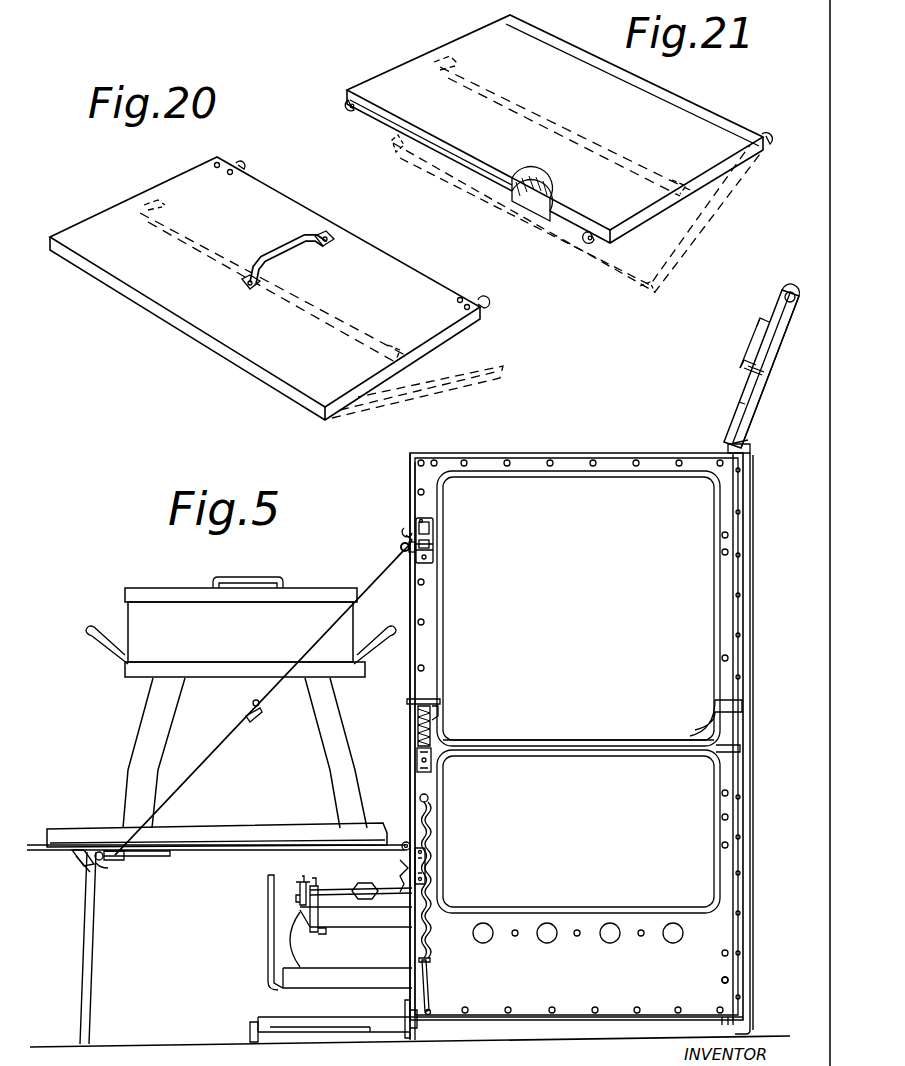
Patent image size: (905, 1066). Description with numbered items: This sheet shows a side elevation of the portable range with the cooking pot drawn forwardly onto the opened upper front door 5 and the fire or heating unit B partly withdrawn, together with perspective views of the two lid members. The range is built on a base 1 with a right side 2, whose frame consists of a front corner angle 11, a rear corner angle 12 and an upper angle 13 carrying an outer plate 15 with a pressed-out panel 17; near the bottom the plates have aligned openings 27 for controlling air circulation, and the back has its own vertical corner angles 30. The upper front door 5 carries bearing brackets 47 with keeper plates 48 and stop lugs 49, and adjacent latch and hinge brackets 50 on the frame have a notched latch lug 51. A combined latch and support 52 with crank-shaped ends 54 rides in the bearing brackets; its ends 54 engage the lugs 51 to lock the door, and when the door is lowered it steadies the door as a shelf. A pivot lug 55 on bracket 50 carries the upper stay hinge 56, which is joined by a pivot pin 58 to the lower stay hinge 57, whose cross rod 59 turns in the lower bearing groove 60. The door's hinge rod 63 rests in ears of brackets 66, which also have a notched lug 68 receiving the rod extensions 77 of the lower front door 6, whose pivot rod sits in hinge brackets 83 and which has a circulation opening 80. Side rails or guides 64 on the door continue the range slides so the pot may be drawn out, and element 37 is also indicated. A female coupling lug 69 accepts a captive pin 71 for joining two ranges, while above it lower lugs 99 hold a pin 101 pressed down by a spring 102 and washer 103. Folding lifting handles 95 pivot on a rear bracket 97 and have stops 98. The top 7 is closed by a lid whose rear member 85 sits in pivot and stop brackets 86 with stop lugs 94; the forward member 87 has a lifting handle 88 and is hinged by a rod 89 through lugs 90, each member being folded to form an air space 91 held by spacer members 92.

In FIG. 5, the base 1 is at (738, 1022).
In FIG. 5, the right side 2 is at (725, 960).
In FIG. 5, the upper front door 5 is at (216, 859).
In FIG. 5, the lower front door 6 is at (334, 1024).
In FIG. 20, the top of the range 7 is at (246, 188).
In FIG. 21, the top of the range 7 is at (580, 58).
In FIG. 5, the top of the range 7 is at (773, 372).
In FIG. 5, the front corner angle 11 is at (410, 494).
In FIG. 5, the rear corner angle 12 is at (750, 864).
In FIG. 5, the upper angle 13 is at (619, 455).
In FIG. 5, the outer plate 15 is at (573, 608).
In FIG. 5, the pressed-out panel 17 is at (690, 787).
In FIG. 5, the aligned openings 27 is at (546, 943).
In FIG. 5, the vertical corner angles 30 is at (750, 610).
In FIG. 5, the table bracket 37 is at (165, 848).
In FIG. 5, the bearing brackets 47 is at (74, 856).
In FIG. 5, the keeper plates 48 is at (137, 883).
In FIG. 5, the stop lugs 49 is at (84, 862).
In FIG. 5, the latch and hinge brackets 50 is at (433, 530).
In FIG. 5, the notched latch lug 51 is at (404, 529).
In FIG. 5, the combined latch and support 52 is at (92, 933).
In FIG. 5, the crank-shaped ends 54 is at (110, 861).
In FIG. 5, the pivot lug 55 is at (430, 548).
In FIG. 5, the upper stay hinge 56 is at (400, 561).
In FIG. 5, the lower stay hinge 57 is at (212, 754).
In FIG. 5, the pivot pin 58 is at (260, 710).
In FIG. 5, the cross rod 59 is at (401, 547).
In FIG. 5, the lower bearing groove 60 is at (104, 858).
In FIG. 5, the hinge rod 63 is at (398, 848).
In FIG. 5, the side rails or guides 64 is at (268, 829).
In FIG. 5, the brackets 66 is at (434, 836).
In FIG. 5, the notched lug 68 is at (406, 866).
In FIG. 5, the female coupling lug 69 is at (428, 857).
In FIG. 5, the captive pin 71 is at (428, 995).
In FIG. 5, the rod extensions 77 is at (250, 1032).
In FIG. 21, the circulation opening 80 is at (768, 142).
In FIG. 5, the hinge brackets 83 is at (414, 1034).
In FIG. 21, the rear member of the lid 85 is at (538, 53).
In FIG. 5, the rear member of the lid 85 is at (768, 391).
In FIG. 5, the pivot and stop brackets 86 is at (751, 446).
In FIG. 20, the forward member of the lid 87 is at (192, 312).
In FIG. 5, the forward member of the lid 87 is at (740, 407).
In FIG. 20, the lifting handle 88 is at (295, 237).
In FIG. 5, the lifting handle 88 is at (742, 364).
In FIG. 5, the rod 89 is at (789, 291).
In FIG. 20, the lugs 90 is at (232, 167).
In FIG. 21, the lugs 90 is at (587, 244).
In FIG. 21, the air space 91 is at (536, 180).
In FIG. 20, the spacer members 92 is at (350, 313).
In FIG. 21, the spacer members 92 is at (660, 168).
In FIG. 5, the stop lugs 94 is at (748, 440).
In FIG. 5, the folding lifting handles 95 is at (640, 748).
In FIG. 5, the rear bracket 97 is at (716, 752).
In FIG. 5, the stops 98 is at (716, 709).
In FIG. 5, the lower lugs 99 is at (432, 770).
In FIG. 5, the pin 101 is at (432, 701).
In FIG. 5, the spring 102 is at (432, 720).
In FIG. 5, the washer 103 is at (434, 740).
In FIG. 5, the heating unit B is at (266, 958).